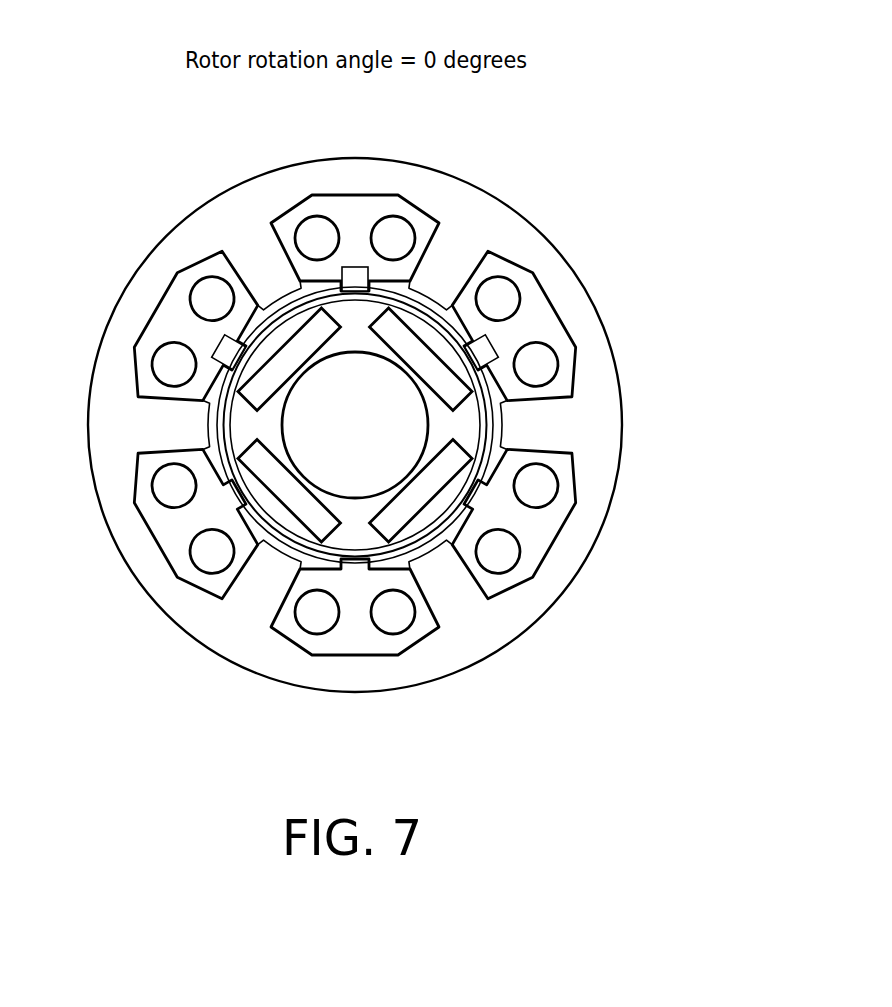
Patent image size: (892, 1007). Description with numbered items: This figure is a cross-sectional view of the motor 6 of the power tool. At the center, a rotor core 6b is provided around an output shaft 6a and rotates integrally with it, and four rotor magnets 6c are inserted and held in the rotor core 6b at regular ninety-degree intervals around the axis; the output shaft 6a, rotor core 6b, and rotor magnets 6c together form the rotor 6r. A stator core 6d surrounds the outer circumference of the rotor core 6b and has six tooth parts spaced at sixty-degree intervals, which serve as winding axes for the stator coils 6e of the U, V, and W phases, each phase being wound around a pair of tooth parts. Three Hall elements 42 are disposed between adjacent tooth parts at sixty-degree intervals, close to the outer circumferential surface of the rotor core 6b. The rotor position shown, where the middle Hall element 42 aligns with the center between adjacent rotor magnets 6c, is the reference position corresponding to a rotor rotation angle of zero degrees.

The motor 6 is at (583, 640).
The rotor 6r is at (743, 300).
The output shaft 6a is at (407, 430).
The rotor core 6b is at (471, 437).
The rotor magnet 6c is at (450, 474).
The stator core 6d is at (207, 625).
The stator coil 6e is at (208, 560).
The Hall element 42 is at (355, 272).